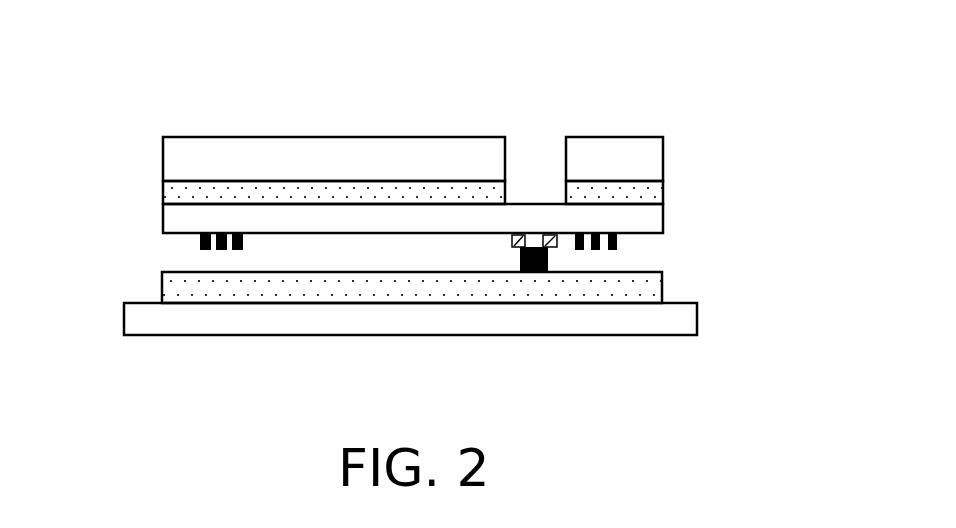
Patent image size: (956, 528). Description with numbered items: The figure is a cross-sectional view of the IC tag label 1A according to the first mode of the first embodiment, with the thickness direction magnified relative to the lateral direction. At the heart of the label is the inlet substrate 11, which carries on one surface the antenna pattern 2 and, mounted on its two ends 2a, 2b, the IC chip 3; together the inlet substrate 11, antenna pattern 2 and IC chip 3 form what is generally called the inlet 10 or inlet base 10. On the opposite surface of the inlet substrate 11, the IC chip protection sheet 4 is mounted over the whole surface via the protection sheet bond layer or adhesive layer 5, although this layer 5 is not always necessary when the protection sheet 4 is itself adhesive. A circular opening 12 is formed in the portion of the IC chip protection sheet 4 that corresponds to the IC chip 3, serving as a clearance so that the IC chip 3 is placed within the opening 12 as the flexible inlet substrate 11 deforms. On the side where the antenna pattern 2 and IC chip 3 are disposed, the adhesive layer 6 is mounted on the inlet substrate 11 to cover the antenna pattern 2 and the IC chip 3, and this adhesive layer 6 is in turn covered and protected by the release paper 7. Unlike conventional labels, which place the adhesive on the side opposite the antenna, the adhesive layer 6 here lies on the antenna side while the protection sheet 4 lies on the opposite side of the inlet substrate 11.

The IC tag label 1A is at (383, 117).
The antenna pattern 2 is at (248, 250).
The end of antenna pattern 2a is at (510, 249).
The end of antenna pattern 2b is at (557, 249).
The IC chip 3 is at (530, 272).
The IC chip protection sheet 4 is at (664, 152).
The protection sheet bond layer or adhesive layer 5 is at (664, 193).
The adhesive layer 6 is at (650, 292).
The release paper 7 is at (687, 325).
The inlet 10 is at (780, 206).
The inlet substrate 11 is at (664, 219).
The opening 12 is at (537, 173).